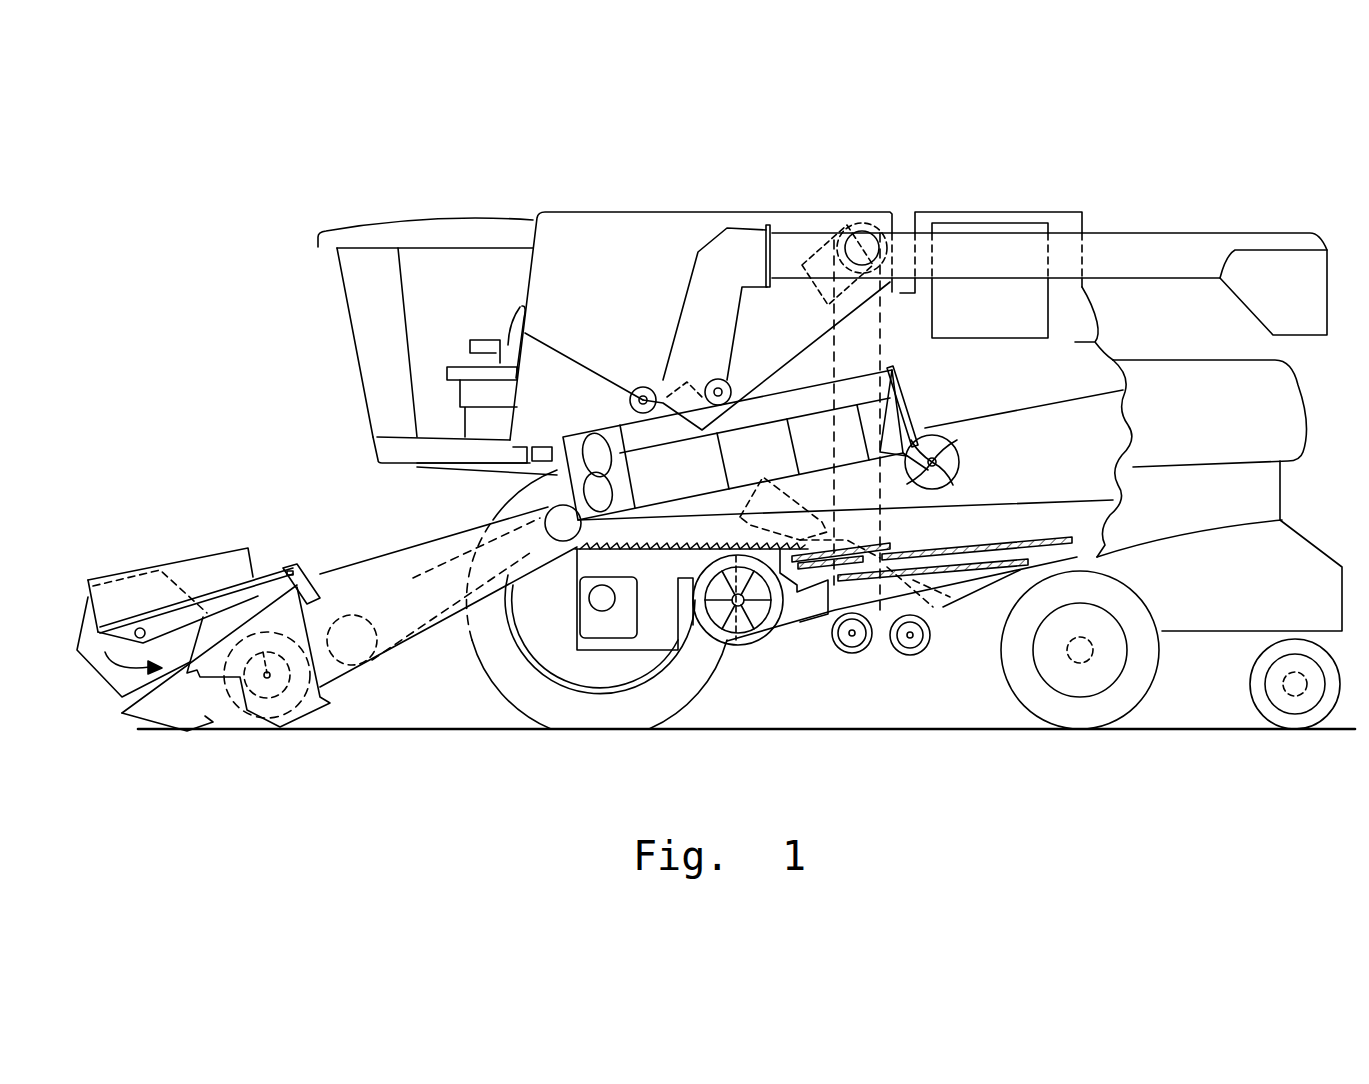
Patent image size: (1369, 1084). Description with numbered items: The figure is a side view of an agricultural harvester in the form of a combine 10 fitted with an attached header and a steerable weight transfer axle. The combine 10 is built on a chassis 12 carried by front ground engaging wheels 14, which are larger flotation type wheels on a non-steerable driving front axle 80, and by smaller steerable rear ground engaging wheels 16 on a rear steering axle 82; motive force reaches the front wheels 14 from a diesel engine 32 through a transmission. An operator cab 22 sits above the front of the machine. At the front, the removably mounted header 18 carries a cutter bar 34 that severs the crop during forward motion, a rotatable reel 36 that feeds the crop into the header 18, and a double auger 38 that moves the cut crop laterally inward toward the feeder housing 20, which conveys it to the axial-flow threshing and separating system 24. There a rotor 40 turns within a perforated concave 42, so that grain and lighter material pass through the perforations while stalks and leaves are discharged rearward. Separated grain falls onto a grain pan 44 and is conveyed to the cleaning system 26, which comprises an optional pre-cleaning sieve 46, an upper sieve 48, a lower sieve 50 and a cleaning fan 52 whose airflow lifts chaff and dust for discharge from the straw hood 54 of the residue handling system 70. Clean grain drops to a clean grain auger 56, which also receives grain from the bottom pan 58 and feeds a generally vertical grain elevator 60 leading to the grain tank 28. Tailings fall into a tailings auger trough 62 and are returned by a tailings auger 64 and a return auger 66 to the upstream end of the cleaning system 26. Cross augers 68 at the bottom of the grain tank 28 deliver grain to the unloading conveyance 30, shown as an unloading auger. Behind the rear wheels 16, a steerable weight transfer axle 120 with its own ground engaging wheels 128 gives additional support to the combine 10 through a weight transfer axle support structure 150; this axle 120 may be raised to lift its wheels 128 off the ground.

The combine 10 is at (415, 190).
The chassis 12 is at (1093, 560).
The front ground engaging wheels 14 is at (500, 688).
The rear ground engaging wheels 16 is at (1157, 667).
The header 18 is at (173, 542).
The feeder housing 20 is at (392, 550).
The operator cab 22 is at (353, 320).
The threshing and separating system 24 is at (498, 488).
The cleaning system 26 is at (796, 672).
The grain tank 28 is at (592, 220).
The unloading conveyance 30 is at (1177, 242).
The diesel engine 32 is at (977, 226).
The cutter bar 34 is at (200, 730).
The rotatable reel 36 is at (86, 622).
The double auger 38 is at (267, 680).
The rotor 40 is at (590, 447).
The perforated concave 42 is at (780, 420).
The grain pan 44 is at (571, 572).
The pre-cleaning sieve 46 is at (890, 542).
The upper sieve 48 is at (990, 543).
The lower sieve 50 is at (963, 573).
The cleaning fan 52 is at (730, 642).
The straw hood 54 is at (1295, 402).
The clean grain auger 56 is at (853, 654).
The bottom pan 58 is at (1017, 585).
The grain elevator 60 is at (885, 343).
The tailings auger trough 62 is at (990, 588).
The tailings auger 64 is at (908, 656).
The return auger 66 is at (822, 520).
The cross augers 68 is at (643, 386).
The residue handling system 70 is at (1250, 547).
The non-steerable driving front axle 80 is at (601, 612).
The rear steering axle 82 is at (1083, 667).
The steerable weight transfer axle 120 is at (1295, 697).
The ground engaging wheels 128 is at (1337, 708).
The weight transfer axle support structure 150 is at (1345, 567).